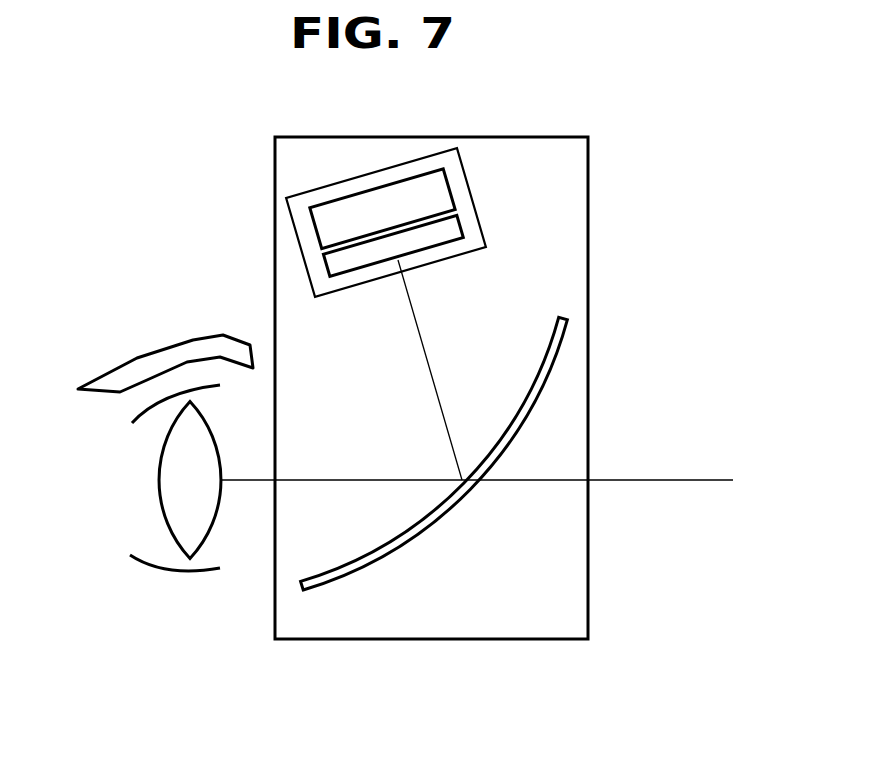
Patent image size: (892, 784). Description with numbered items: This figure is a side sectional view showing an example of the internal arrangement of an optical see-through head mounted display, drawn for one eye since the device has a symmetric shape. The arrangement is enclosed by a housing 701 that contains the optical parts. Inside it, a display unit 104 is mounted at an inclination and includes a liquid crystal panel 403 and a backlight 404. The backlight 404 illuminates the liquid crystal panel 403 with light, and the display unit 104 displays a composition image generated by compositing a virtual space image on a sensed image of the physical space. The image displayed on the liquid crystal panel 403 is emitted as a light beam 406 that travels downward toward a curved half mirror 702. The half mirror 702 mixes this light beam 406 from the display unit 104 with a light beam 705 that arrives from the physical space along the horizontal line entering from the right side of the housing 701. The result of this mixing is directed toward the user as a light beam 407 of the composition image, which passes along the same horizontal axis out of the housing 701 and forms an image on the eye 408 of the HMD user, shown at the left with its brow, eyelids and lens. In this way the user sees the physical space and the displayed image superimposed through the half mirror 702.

The display unit housing 701 is at (542, 137).
The display unit 104 is at (472, 253).
The backlight 404 is at (440, 193).
The liquid crystal panel 403 is at (457, 233).
The light beam 406 is at (425, 357).
The light beam of composition image 407 is at (370, 478).
The light beam from physical space 705 is at (670, 480).
The half mirror 702 is at (388, 555).
The eye 408 is at (163, 505).